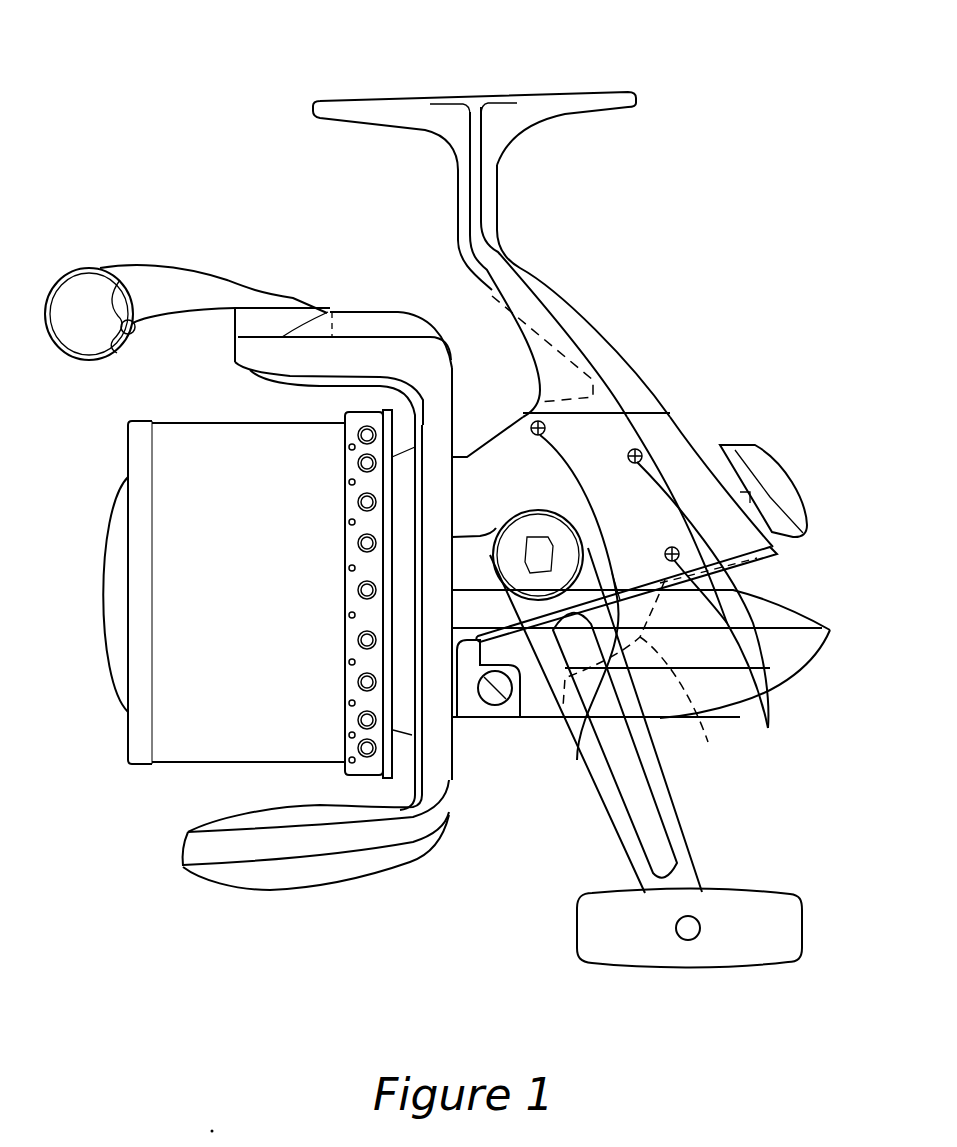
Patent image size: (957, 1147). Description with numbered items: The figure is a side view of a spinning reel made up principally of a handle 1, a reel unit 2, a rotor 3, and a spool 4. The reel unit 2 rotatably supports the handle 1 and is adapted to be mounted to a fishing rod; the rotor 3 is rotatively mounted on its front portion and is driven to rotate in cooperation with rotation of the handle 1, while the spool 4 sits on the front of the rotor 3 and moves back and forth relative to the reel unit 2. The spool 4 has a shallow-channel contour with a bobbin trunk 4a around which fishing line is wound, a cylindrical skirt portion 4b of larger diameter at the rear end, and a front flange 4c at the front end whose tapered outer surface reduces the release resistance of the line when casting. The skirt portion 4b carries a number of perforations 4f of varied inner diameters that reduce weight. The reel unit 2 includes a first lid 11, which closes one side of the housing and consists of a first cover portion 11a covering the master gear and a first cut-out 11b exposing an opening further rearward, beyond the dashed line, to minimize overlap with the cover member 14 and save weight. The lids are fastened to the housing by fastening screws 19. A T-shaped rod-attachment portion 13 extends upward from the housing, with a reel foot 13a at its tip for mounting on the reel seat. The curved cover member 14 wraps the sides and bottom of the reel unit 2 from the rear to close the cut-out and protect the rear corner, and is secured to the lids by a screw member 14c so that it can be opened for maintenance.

The handle 1 is at (667, 813).
The reel unit 2 is at (632, 358).
The rotor 3 is at (407, 853).
The spool 4 is at (247, 653).
The bobbin trunk 4a is at (223, 440).
The cylindrical skirt portion 4b is at (367, 413).
The front flange 4c is at (137, 432).
The perforations 4f is at (367, 755).
The first lid 11 is at (690, 470).
The first cover portion 11a is at (577, 760).
The first cut-out 11b is at (708, 713).
The rod-attachment portion 13 is at (543, 317).
The reel foot 13a is at (544, 104).
The cover member 14 is at (783, 587).
The screw member 14c is at (487, 707).
The fastening screws 19 is at (768, 710).